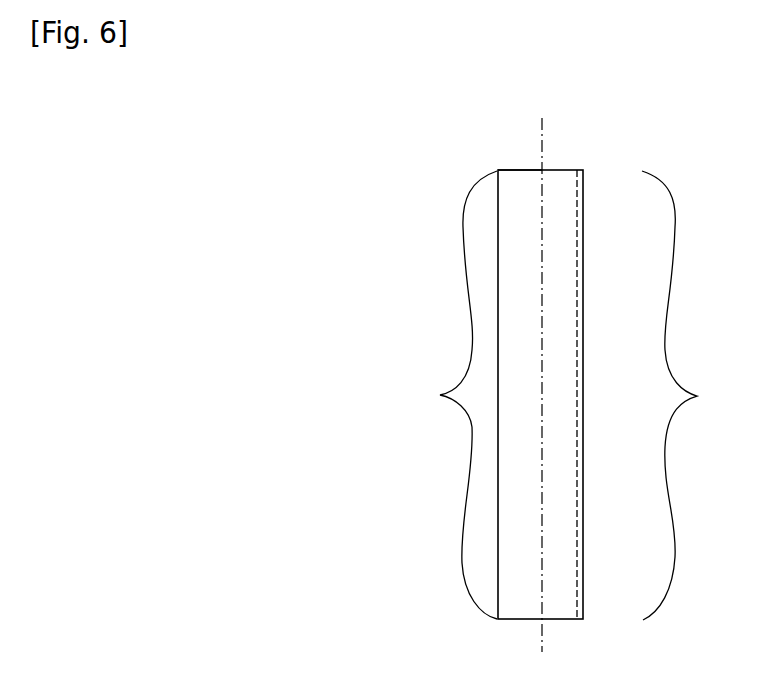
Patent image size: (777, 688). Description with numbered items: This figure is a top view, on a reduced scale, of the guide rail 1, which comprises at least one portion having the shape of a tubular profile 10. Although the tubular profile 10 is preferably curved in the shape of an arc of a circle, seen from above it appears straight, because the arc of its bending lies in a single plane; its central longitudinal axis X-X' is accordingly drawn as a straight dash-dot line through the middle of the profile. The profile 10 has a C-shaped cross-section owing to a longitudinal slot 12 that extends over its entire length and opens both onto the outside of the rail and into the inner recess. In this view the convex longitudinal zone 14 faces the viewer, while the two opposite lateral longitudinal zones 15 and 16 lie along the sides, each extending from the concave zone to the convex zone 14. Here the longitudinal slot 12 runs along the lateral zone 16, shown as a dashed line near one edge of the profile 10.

The guide rail 1 is at (524, 384).
The tubular profile 10 is at (437, 554).
The longitudinal slot 12 is at (583, 253).
The convex longitudinal zone 14 is at (522, 197).
The lateral longitudinal zone 15 is at (454, 395).
The lateral longitudinal zone 16 is at (685, 395).